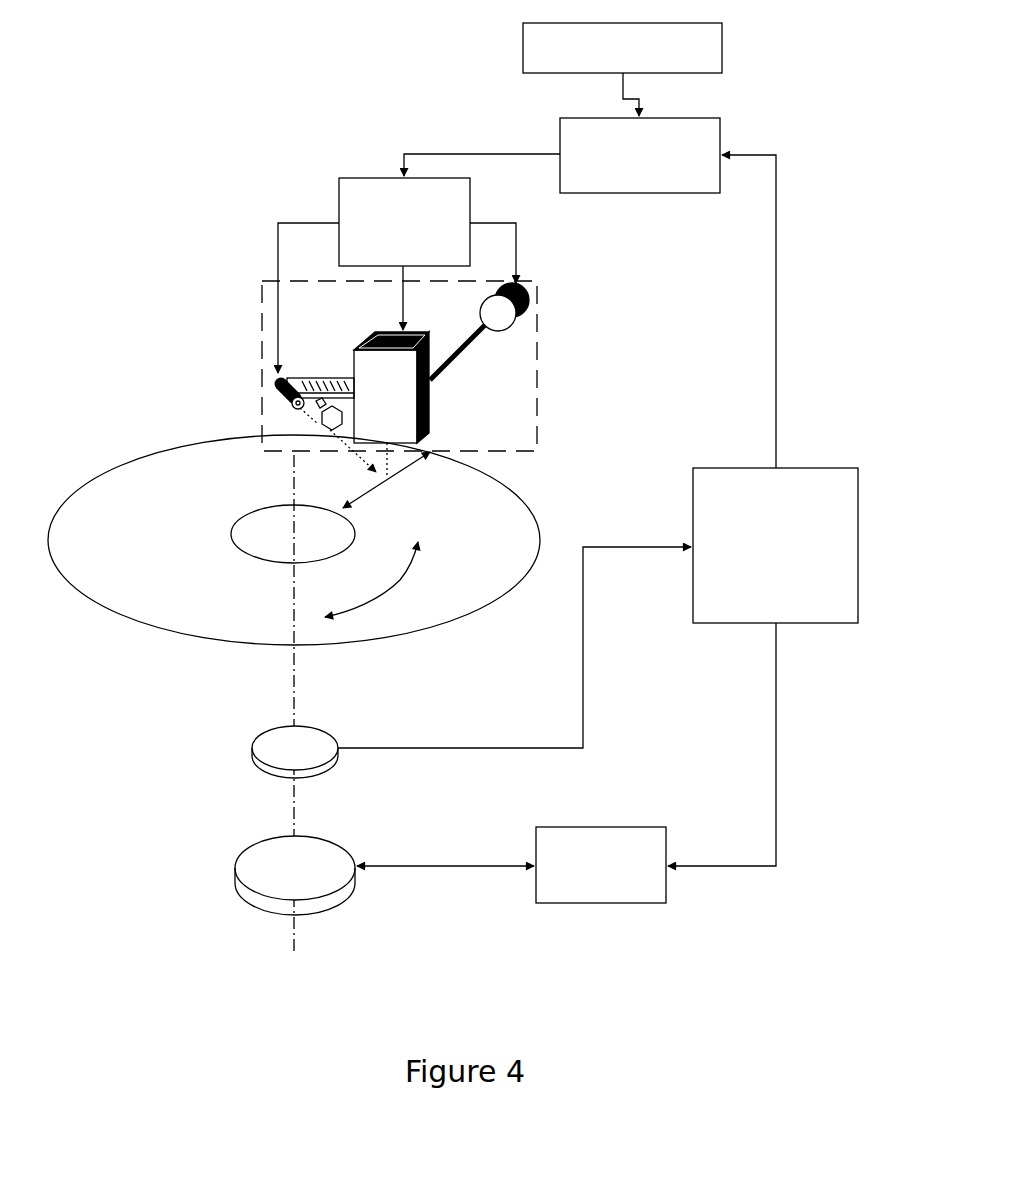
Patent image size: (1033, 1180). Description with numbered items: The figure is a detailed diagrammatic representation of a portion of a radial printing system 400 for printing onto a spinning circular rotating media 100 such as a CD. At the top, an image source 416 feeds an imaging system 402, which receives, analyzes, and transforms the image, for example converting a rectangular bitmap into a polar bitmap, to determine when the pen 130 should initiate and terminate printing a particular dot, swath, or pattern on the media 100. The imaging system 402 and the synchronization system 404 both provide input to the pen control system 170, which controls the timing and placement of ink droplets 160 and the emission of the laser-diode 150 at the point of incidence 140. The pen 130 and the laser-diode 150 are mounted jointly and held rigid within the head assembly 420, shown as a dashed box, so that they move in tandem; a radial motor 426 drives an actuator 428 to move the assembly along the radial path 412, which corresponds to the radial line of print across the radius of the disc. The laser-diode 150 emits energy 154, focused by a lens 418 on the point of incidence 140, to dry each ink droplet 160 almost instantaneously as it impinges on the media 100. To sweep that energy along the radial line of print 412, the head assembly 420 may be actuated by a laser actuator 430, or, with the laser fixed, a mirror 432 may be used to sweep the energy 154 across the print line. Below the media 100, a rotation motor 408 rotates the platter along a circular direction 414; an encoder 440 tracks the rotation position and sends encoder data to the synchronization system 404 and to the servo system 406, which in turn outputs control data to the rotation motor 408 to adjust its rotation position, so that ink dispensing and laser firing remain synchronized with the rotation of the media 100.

The rotating media 100 is at (132, 583).
The pen 130 is at (433, 398).
The point of incidence 140 is at (400, 480).
The laser-diode 150 is at (289, 382).
The energy 154 is at (382, 476).
The ink droplets 160 is at (395, 477).
The pen control system 170 is at (376, 178).
The radial printing system 400 is at (138, 266).
The imaging system 402 is at (725, 118).
The synchronization system 404 is at (777, 623).
The servo system 406 is at (597, 903).
The rotation motor 408 is at (270, 883).
The radial path 412 is at (397, 470).
The circular direction 414 is at (397, 590).
The image source 416 is at (523, 46).
The lens 418 is at (292, 401).
The head assembly 420 is at (262, 293).
The radial motor 426 is at (524, 304).
The actuator 428 is at (466, 349).
The laser actuator 430 is at (346, 378).
The mirror 432 is at (318, 430).
The encoder 440 is at (275, 757).